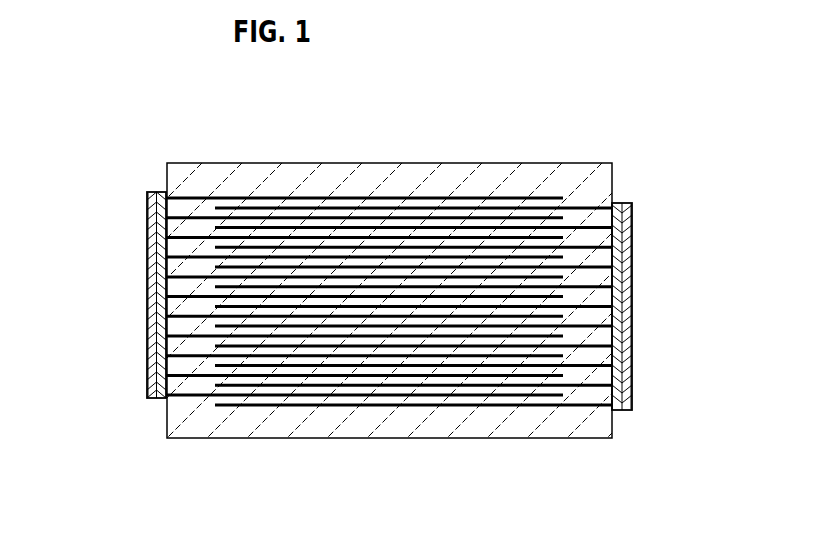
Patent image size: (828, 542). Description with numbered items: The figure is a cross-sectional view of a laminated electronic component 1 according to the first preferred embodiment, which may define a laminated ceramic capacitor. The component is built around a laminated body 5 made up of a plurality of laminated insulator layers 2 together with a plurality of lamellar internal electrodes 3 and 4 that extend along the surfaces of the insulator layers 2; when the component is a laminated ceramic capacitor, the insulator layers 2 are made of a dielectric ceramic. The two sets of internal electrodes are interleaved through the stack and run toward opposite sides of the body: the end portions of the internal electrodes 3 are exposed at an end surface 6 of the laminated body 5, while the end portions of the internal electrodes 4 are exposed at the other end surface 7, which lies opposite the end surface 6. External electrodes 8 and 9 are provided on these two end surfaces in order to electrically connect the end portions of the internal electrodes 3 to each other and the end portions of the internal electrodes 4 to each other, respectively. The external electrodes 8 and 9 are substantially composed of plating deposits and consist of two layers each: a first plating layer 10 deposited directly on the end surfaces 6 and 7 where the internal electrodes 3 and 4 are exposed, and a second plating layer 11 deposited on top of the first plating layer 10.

The laminated electronic component 1 is at (151, 86).
The insulator layers 2 is at (355, 389).
The internal electrodes 3 is at (327, 217).
The internal electrodes 4 is at (410, 228).
The laminated body 5 is at (523, 156).
The end surface 6 is at (163, 323).
The other end surface 7 is at (615, 333).
The external electrode 8 is at (70, 212).
The external electrode 9 is at (713, 200).
The first plating layer 10 is at (163, 227).
The second plating layer 11 is at (148, 263).